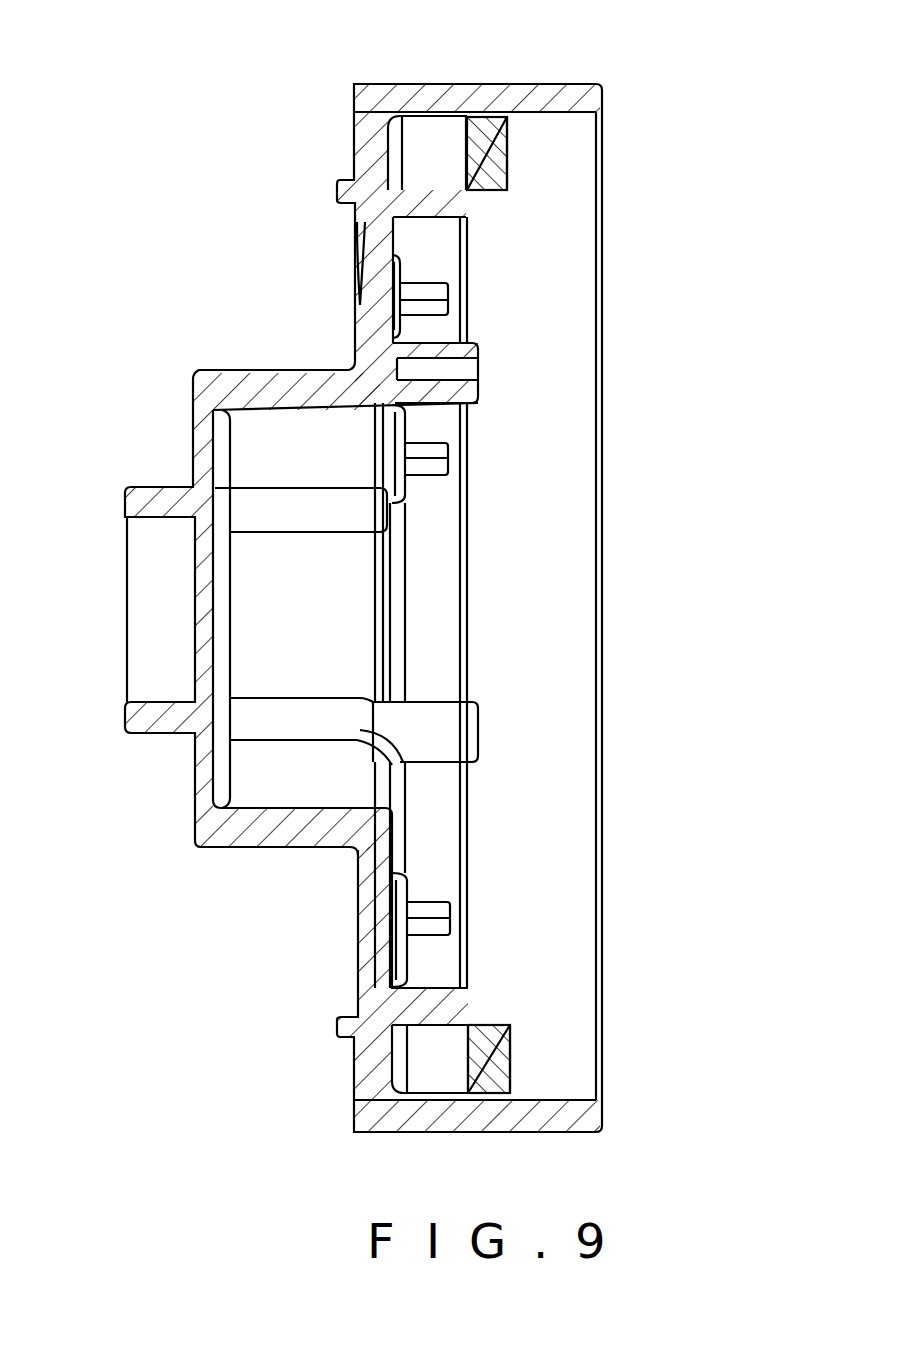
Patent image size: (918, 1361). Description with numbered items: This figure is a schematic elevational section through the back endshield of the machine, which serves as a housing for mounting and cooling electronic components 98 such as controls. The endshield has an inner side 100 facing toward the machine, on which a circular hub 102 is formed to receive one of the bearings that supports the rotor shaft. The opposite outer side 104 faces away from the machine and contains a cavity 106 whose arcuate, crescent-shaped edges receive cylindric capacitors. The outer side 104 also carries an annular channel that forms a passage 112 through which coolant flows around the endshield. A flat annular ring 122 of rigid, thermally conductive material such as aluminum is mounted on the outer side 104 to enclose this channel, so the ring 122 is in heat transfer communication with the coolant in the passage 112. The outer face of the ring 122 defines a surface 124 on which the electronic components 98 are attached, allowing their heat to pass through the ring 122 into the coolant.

The electronic components 98 is at (510, 157).
The inner side 100 is at (343, 303).
The circular hub 102 is at (152, 487).
The outer side 104 is at (480, 296).
The cavity 106 is at (332, 808).
The passage 112 is at (428, 126).
The ring 122 is at (470, 246).
The surface 124 is at (507, 130).